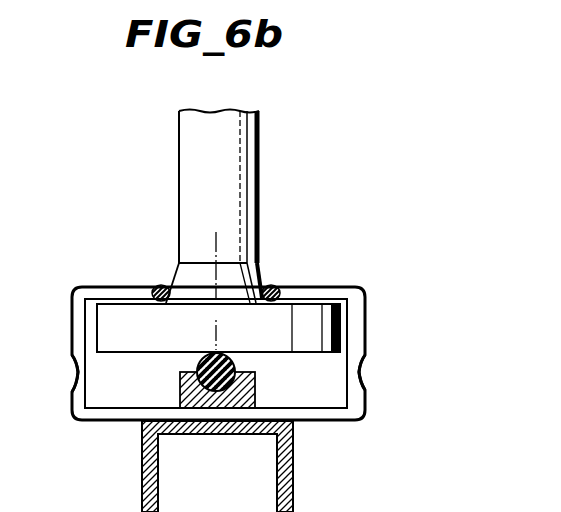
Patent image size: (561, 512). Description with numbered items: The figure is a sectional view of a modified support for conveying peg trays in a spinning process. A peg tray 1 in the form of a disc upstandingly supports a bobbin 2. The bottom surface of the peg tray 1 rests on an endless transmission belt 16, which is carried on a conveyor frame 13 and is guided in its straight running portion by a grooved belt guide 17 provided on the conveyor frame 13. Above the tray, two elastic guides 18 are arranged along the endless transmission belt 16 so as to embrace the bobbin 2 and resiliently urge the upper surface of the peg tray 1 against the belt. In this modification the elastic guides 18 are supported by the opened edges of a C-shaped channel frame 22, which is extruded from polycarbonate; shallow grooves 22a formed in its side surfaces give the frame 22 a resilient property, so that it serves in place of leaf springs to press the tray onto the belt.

The peg tray 1 is at (107, 313).
The bobbin 2 is at (258, 155).
The conveyor frame 13 is at (293, 463).
The endless transmission belt 16 is at (216, 392).
The grooved belt guide 17 is at (183, 378).
The elastic guide 18 is at (160, 286).
The C-shaped channel frame 22 is at (367, 318).
The shallow groove 22a is at (72, 375).